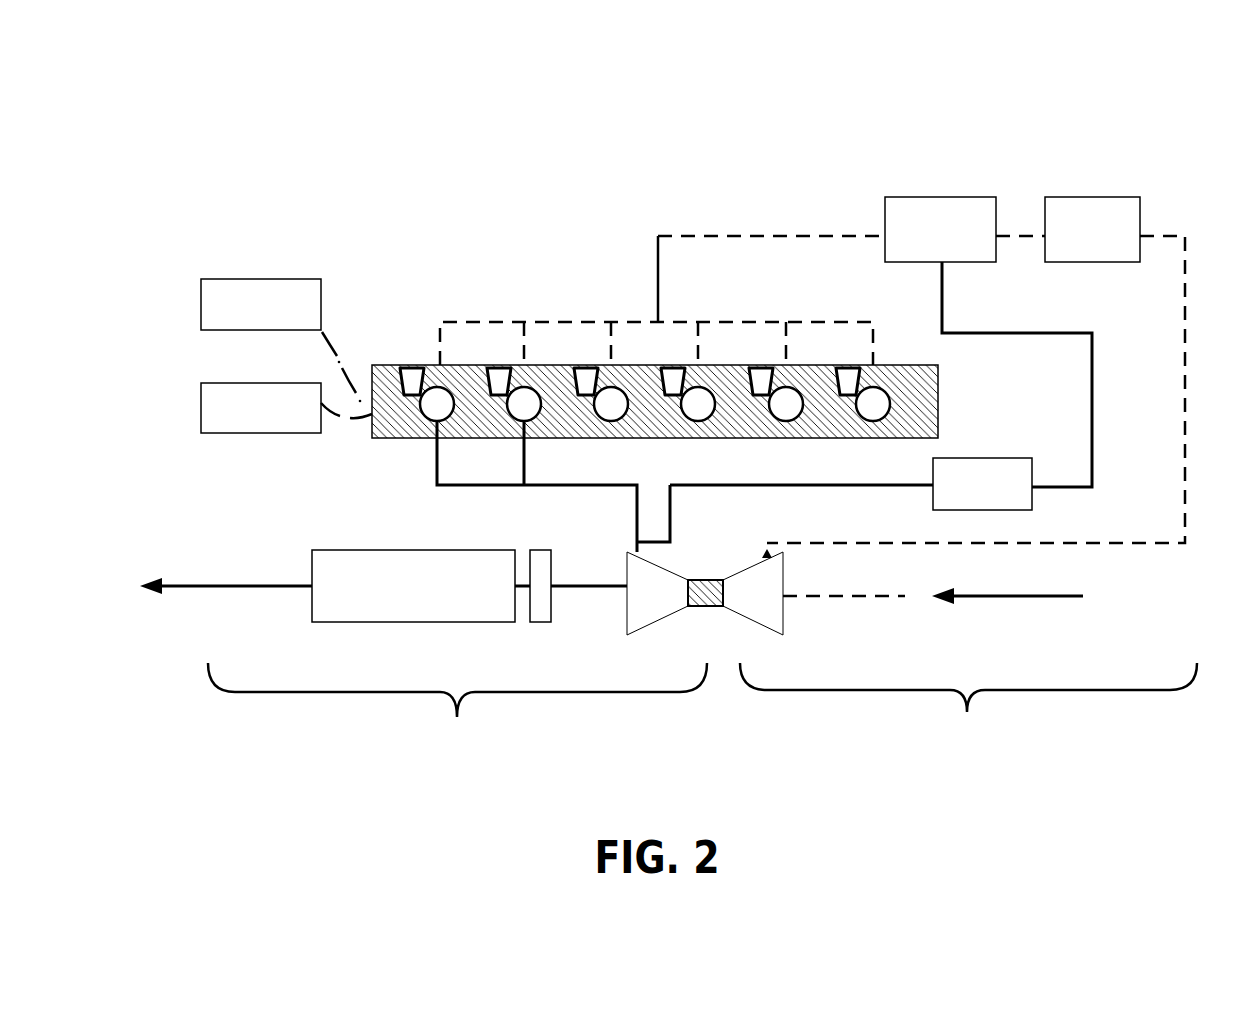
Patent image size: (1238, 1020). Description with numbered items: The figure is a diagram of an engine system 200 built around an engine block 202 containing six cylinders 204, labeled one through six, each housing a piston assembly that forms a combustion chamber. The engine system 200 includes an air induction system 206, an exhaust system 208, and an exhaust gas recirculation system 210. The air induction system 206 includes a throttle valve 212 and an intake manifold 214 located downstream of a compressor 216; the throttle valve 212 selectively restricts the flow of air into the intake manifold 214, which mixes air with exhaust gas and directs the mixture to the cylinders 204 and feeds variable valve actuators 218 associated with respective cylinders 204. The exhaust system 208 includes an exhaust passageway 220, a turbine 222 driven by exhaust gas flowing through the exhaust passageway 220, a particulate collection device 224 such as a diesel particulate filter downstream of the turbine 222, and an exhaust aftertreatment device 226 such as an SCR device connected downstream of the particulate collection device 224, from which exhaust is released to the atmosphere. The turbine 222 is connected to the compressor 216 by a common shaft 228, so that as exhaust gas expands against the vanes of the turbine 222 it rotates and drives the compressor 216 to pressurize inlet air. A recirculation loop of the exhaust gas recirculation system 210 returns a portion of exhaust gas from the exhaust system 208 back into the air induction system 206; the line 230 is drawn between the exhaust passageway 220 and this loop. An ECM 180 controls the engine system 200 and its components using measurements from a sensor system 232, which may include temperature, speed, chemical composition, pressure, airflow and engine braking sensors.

The engine system 200 is at (372, 203).
The engine block 202 is at (380, 365).
The cylinders 204 is at (593, 404).
The variable valve actuators 218 is at (748, 365).
The sensor system 232 is at (281, 340).
The ECM 180 is at (286, 408).
The intake manifold 214 is at (952, 197).
The throttle valve 212 is at (1089, 197).
The exhaust gas recirculation (EGR) system 210 is at (997, 458).
The exhaust passageway 220 is at (637, 523).
The EGR passage 230 is at (903, 485).
The turbine 222 is at (630, 614).
The compressor 216 is at (783, 615).
The common shaft 228 is at (710, 580).
The exhaust aftertreatment device 226 is at (352, 550).
The particulate collection device 224 is at (541, 615).
The exhaust system 208 is at (457, 707).
The air induction system 206 is at (968, 706).